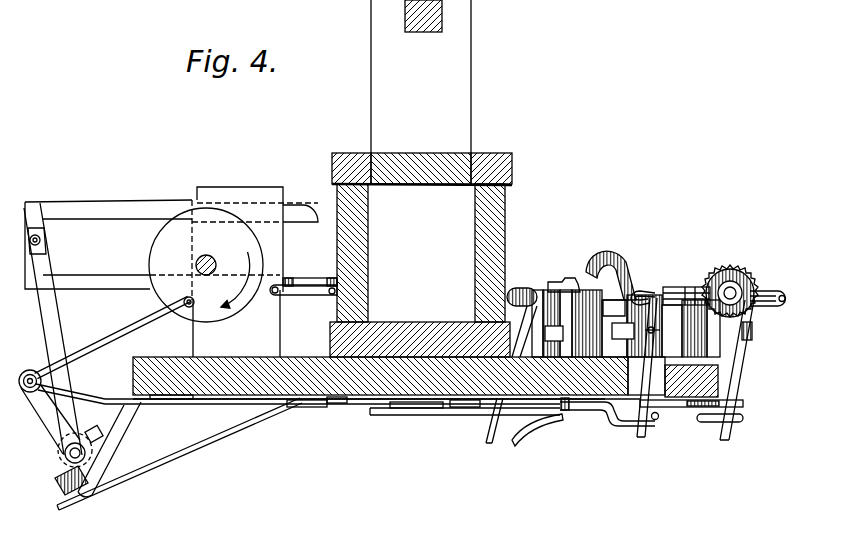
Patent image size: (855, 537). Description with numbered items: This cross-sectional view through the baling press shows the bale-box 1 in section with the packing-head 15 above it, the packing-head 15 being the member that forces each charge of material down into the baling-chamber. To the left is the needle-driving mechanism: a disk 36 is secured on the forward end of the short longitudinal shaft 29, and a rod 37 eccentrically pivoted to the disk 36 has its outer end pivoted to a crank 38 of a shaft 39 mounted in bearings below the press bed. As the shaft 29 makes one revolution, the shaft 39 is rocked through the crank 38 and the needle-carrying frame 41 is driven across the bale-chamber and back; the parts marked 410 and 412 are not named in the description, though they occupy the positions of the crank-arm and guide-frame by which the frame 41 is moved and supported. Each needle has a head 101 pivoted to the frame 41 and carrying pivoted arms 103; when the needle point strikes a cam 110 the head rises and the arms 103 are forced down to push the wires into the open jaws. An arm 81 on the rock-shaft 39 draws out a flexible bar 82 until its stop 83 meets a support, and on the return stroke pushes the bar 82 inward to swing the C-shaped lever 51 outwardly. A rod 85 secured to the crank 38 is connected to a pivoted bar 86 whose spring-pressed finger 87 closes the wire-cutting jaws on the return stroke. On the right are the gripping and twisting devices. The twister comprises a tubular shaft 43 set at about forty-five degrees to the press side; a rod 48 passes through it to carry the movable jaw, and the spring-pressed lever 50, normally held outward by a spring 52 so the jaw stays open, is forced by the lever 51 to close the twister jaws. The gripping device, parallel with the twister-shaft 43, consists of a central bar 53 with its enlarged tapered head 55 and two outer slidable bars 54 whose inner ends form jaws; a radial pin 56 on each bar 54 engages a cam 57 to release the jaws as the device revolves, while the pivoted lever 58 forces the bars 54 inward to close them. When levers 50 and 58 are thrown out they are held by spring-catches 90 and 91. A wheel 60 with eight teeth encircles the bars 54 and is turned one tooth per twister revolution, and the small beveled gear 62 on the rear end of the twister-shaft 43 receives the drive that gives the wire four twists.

The bale-box 1 is at (428, 259).
The packing-head 15 is at (421, 76).
The short longitudinal shaft 29 is at (212, 255).
The disk 36 is at (180, 227).
The rod 37 is at (135, 325).
The crank 38 is at (67, 430).
The shaft 39 is at (72, 452).
The needle-carrying frame 41 is at (98, 208).
The twister-shaft 43 is at (667, 288).
The rod 48 is at (785, 302).
The spring-pressed pivoted lever 50 is at (745, 375).
The C-shaped lever 51 is at (650, 428).
The spring 52 is at (752, 333).
The central bar 53 is at (666, 326).
The outer slidable bars 54 is at (606, 328).
The enlarged tapered head 55 is at (513, 288).
The radial pin 56 is at (625, 280).
The cam 57 is at (767, 420).
The pivoted lever 58 is at (645, 292).
The wheel 60 is at (568, 282).
The small beveled gear 62 is at (732, 268).
The arm 81 is at (105, 477).
The bar 82 is at (247, 427).
The stop 83 is at (566, 412).
The rod 85 is at (110, 397).
The pivoted bar 86 is at (403, 416).
The spring-pressed finger 87 is at (490, 441).
The spring-catch 90 is at (744, 404).
The spring-catch 91 is at (658, 418).
The head 101 is at (315, 277).
The pivoted arm 103 is at (305, 292).
The cam 110 is at (617, 263).
The arm 410 is at (55, 328).
The housing 412 is at (257, 177).